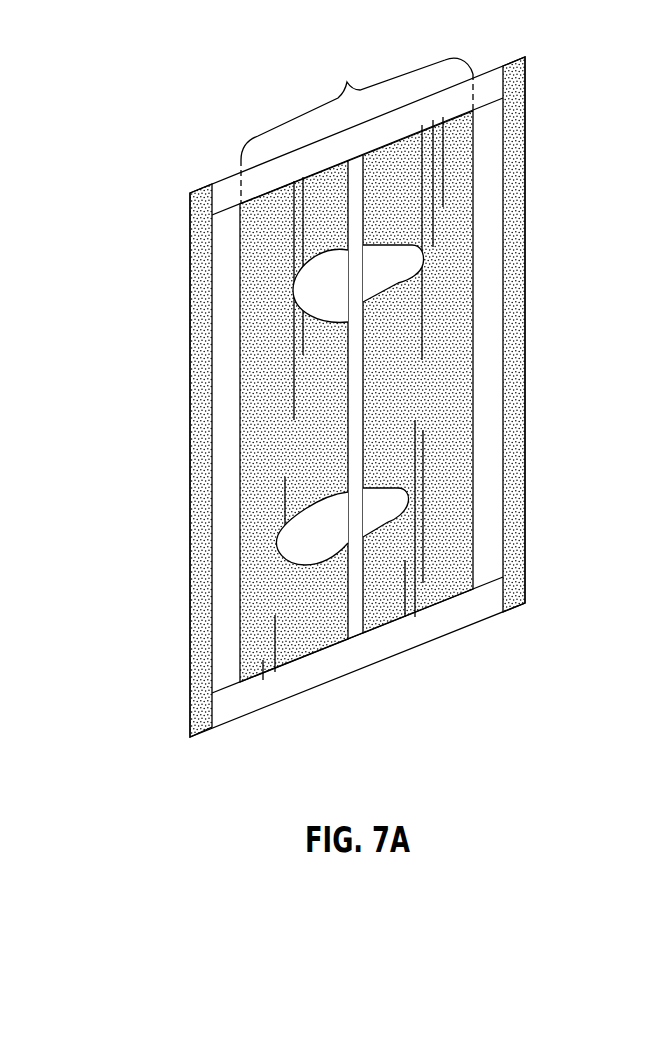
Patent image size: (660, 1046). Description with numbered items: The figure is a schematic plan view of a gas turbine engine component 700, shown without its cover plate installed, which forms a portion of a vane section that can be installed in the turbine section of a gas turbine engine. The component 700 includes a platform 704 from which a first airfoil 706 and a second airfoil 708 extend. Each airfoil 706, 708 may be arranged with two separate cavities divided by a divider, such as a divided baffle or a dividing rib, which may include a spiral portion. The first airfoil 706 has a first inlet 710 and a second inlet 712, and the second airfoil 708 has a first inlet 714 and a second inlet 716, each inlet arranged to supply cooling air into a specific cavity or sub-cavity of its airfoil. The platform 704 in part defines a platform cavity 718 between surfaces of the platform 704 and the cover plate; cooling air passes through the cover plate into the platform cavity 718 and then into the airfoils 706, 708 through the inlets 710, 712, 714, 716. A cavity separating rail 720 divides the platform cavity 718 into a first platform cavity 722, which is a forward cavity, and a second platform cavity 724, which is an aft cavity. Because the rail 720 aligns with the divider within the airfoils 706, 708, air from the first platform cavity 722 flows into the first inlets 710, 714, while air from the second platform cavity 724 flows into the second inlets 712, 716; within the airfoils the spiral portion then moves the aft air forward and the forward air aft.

The gas turbine engine component 700 is at (197, 79).
The platform 704 is at (517, 260).
The first airfoil 706 is at (395, 287).
The second airfoil 708 is at (382, 528).
The first inlet 710 is at (328, 298).
The second inlet 712 is at (397, 262).
The first inlet 714 is at (308, 543).
The second inlet 716 is at (382, 507).
The platform cavity 718 is at (357, 128).
The cavity separating rail 720 is at (355, 627).
The first platform cavity 722 is at (323, 403).
The second platform cavity 724 is at (442, 393).